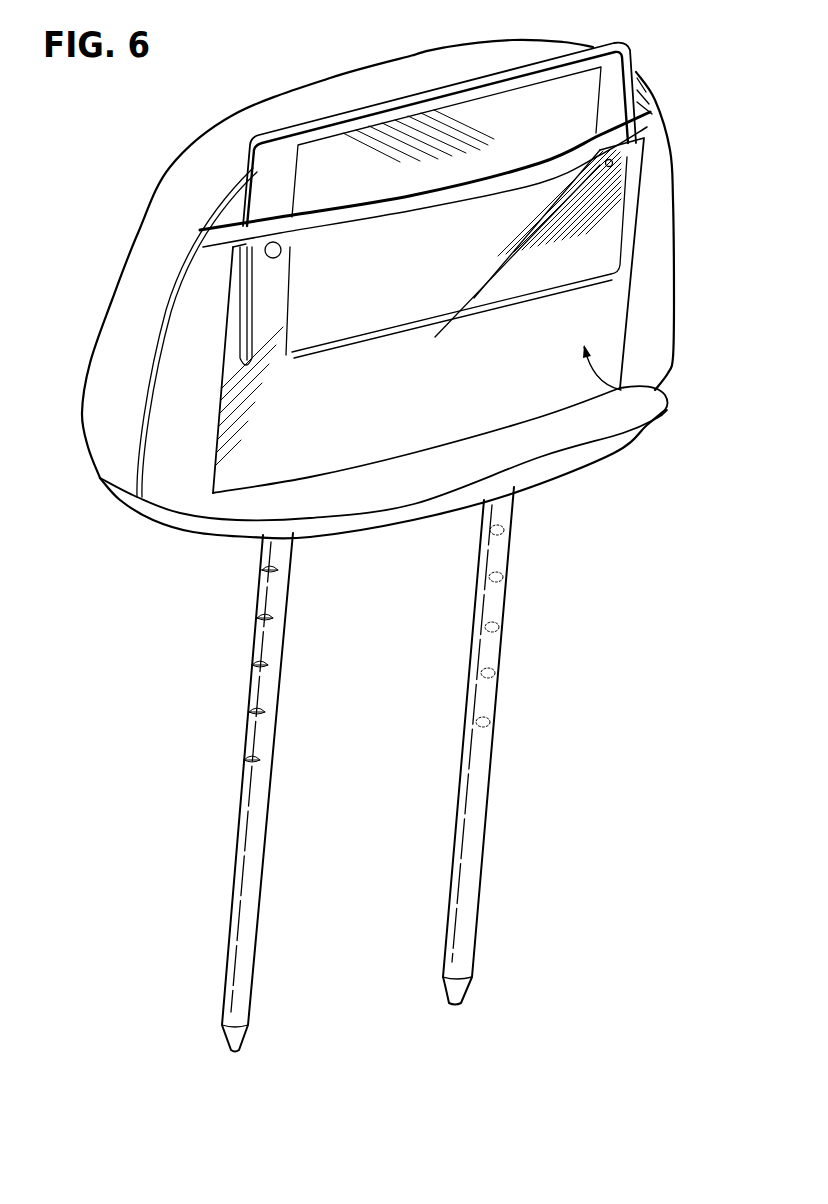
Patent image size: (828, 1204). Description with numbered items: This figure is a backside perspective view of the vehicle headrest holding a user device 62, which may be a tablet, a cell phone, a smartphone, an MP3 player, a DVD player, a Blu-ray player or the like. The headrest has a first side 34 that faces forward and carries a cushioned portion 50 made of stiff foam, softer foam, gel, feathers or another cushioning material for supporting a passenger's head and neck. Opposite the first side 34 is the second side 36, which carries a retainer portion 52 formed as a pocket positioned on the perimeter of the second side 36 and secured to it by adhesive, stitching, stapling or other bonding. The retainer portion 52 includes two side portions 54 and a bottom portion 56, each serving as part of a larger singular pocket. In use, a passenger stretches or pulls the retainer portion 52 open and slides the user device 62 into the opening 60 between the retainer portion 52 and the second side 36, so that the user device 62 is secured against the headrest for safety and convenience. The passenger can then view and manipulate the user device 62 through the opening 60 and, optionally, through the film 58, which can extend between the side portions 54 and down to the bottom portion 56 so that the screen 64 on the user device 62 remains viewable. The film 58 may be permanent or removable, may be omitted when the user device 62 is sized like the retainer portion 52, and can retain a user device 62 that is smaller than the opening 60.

The first side 34 is at (333, 80).
The second side 36 is at (644, 100).
The cushioned portion 50 is at (133, 283).
The retainer portion 52 is at (654, 130).
The side portions 54 is at (654, 270).
The bottom portion 56 is at (551, 435).
The film 58 is at (335, 457).
The opening 60 is at (648, 388).
The user device 62 is at (288, 143).
The screen 64 is at (449, 118).